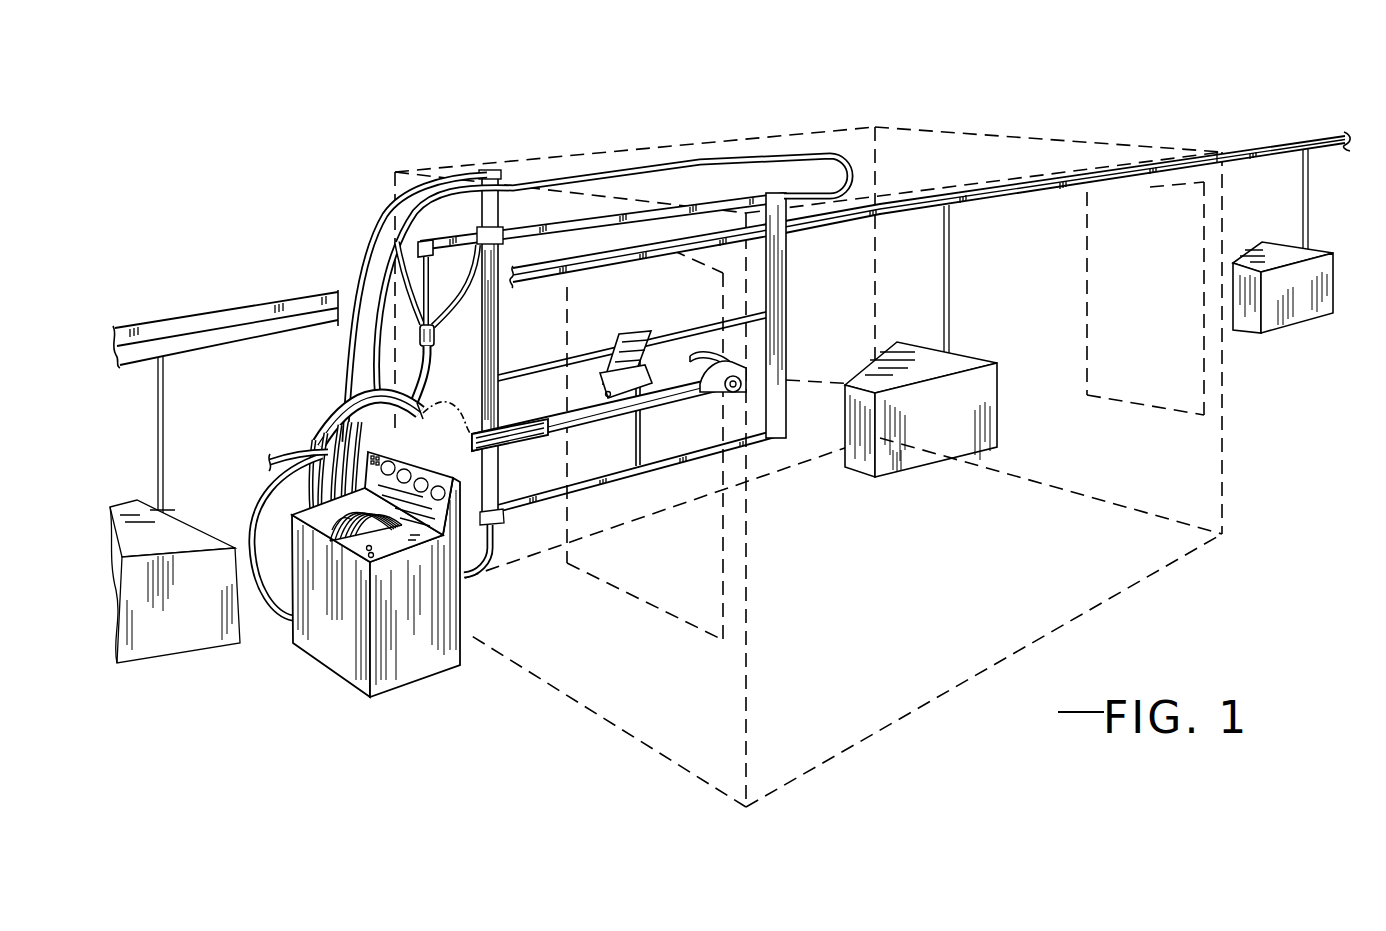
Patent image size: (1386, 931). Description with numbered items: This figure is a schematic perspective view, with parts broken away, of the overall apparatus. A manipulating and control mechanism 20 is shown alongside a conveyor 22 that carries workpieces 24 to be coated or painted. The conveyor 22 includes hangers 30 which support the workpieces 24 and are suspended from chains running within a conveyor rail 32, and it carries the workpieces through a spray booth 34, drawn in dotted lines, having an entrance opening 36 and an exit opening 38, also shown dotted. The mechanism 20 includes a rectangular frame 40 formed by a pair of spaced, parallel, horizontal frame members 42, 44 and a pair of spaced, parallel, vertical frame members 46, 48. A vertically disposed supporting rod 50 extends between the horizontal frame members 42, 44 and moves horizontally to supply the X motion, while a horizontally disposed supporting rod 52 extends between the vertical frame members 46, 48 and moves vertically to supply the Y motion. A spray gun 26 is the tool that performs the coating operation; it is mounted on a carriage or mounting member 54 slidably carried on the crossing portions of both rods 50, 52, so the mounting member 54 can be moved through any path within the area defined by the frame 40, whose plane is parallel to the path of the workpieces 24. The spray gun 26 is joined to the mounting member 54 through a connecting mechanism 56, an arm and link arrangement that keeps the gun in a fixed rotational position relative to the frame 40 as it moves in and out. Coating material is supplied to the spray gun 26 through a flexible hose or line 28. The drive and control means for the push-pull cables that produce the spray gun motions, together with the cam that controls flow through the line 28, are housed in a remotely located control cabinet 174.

The manipulating and control mechanism 20 is at (292, 250).
The conveyor 22 is at (1250, 128).
The workpieces 24 is at (975, 356).
The spray gun 26 is at (750, 395).
The flexible hose or line 28 is at (286, 449).
The hangers 30 is at (951, 291).
The conveyor rail 32 is at (1326, 131).
The spray booth 34 is at (1240, 433).
The entrance opening 36 is at (1182, 413).
The exit opening 38 is at (648, 608).
The rectangular frame 40 is at (786, 297).
The horizontal frame member 42 is at (590, 488).
The horizontal frame member 44 is at (620, 206).
The vertical frame member 46 is at (788, 333).
The vertical frame member 48 is at (481, 352).
The vertically disposed elongate supporting member or rod 50 is at (630, 283).
The horizontally disposed elongate supporting member or rod 52 is at (556, 352).
The carriage or mounting member 54 is at (630, 332).
The connecting mechanism or means 56 is at (698, 398).
The control cabinet 174 is at (398, 665).